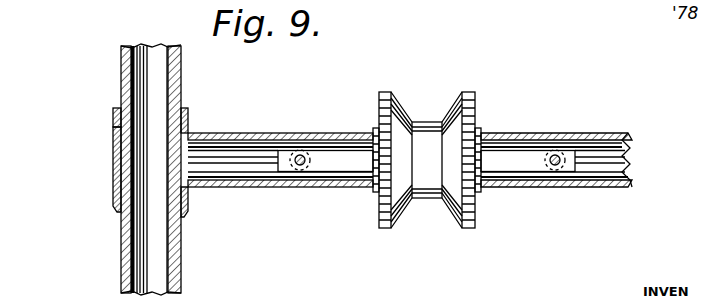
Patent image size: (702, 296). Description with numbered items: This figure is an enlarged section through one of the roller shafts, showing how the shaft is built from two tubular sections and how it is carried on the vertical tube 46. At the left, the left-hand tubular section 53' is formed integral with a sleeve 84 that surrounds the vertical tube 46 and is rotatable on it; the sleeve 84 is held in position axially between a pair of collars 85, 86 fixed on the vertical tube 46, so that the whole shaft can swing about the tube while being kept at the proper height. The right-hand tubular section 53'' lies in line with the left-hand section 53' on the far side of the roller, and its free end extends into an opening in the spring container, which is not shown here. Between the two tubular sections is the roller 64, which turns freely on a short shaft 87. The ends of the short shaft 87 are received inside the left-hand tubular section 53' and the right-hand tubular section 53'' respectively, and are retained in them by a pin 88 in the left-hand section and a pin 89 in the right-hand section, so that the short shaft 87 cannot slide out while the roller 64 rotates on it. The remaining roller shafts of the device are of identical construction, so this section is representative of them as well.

The vertical tube 46 is at (182, 265).
The sleeve 84 is at (113, 163).
The collar 85 is at (113, 115).
The collar 86 is at (188, 203).
The left-hand tubular section 53' is at (280, 182).
The right-hand tubular section 53'' is at (556, 180).
The short shaft 87 is at (344, 152).
The pin 88 is at (300, 155).
The pin 89 is at (557, 155).
The roller 64 is at (470, 228).